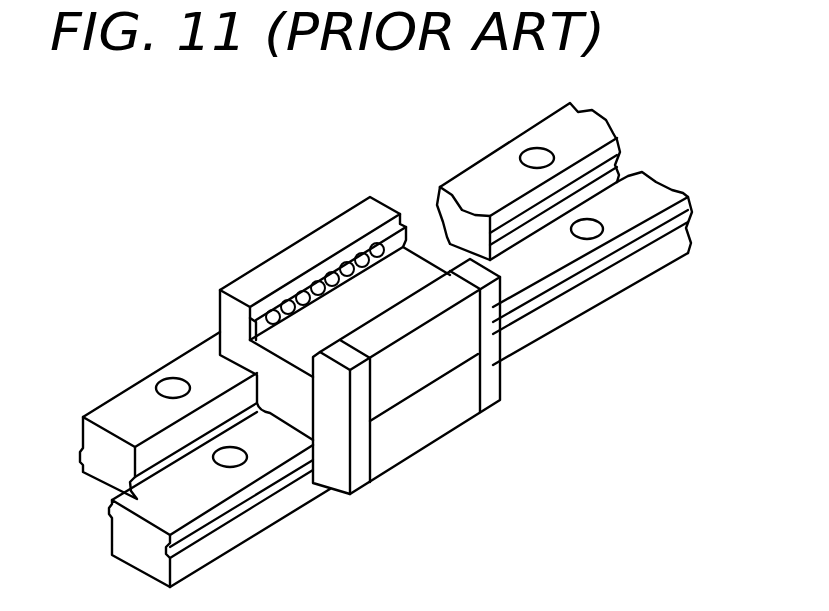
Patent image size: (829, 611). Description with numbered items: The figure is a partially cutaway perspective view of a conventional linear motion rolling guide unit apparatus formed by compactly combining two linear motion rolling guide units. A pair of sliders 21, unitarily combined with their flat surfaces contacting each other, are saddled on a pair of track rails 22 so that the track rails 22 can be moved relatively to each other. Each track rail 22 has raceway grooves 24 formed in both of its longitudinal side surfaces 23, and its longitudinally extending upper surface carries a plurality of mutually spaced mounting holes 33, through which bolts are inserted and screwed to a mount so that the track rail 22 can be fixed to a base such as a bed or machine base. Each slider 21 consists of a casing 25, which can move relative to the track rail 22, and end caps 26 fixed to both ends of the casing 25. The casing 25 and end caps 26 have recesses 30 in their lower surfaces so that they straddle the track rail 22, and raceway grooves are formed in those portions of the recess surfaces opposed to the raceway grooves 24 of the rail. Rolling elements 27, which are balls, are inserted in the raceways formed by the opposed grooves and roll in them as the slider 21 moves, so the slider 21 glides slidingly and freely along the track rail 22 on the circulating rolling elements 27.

The slider 21 is at (362, 335).
The track rail 22 is at (130, 410).
The longitudinal side surface 23 is at (210, 417).
The raceway groove 24 is at (115, 511).
The casing 25 is at (333, 233).
The end cap 26 is at (379, 210).
The rolling element 27 is at (301, 292).
The recess 30 is at (372, 285).
The mounting hole 33 is at (537, 150).